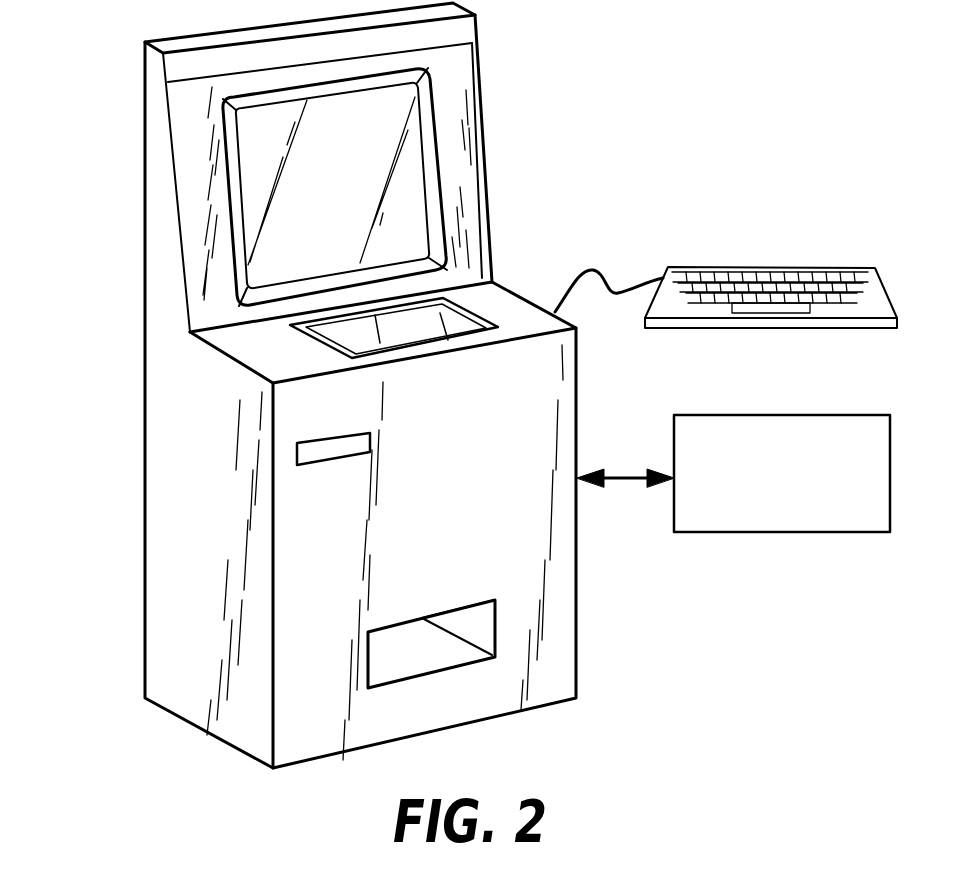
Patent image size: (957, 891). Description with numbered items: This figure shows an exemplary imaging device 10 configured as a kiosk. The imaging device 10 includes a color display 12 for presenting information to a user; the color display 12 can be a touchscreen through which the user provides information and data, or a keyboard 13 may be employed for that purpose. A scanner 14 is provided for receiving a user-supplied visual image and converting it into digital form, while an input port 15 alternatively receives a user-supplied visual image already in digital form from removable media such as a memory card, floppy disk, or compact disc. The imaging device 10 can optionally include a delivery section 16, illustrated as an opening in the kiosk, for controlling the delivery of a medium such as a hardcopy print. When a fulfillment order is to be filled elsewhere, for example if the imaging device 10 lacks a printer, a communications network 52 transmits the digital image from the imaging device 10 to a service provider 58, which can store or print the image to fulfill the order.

The imaging device 10 is at (156, 131).
The color display 12 is at (410, 151).
The keyboard 13 is at (748, 267).
The scanner 14 is at (468, 325).
The input port 15 is at (348, 432).
The delivery section 16 is at (475, 620).
The communications network 52 is at (625, 482).
The service provider 58 is at (770, 533).